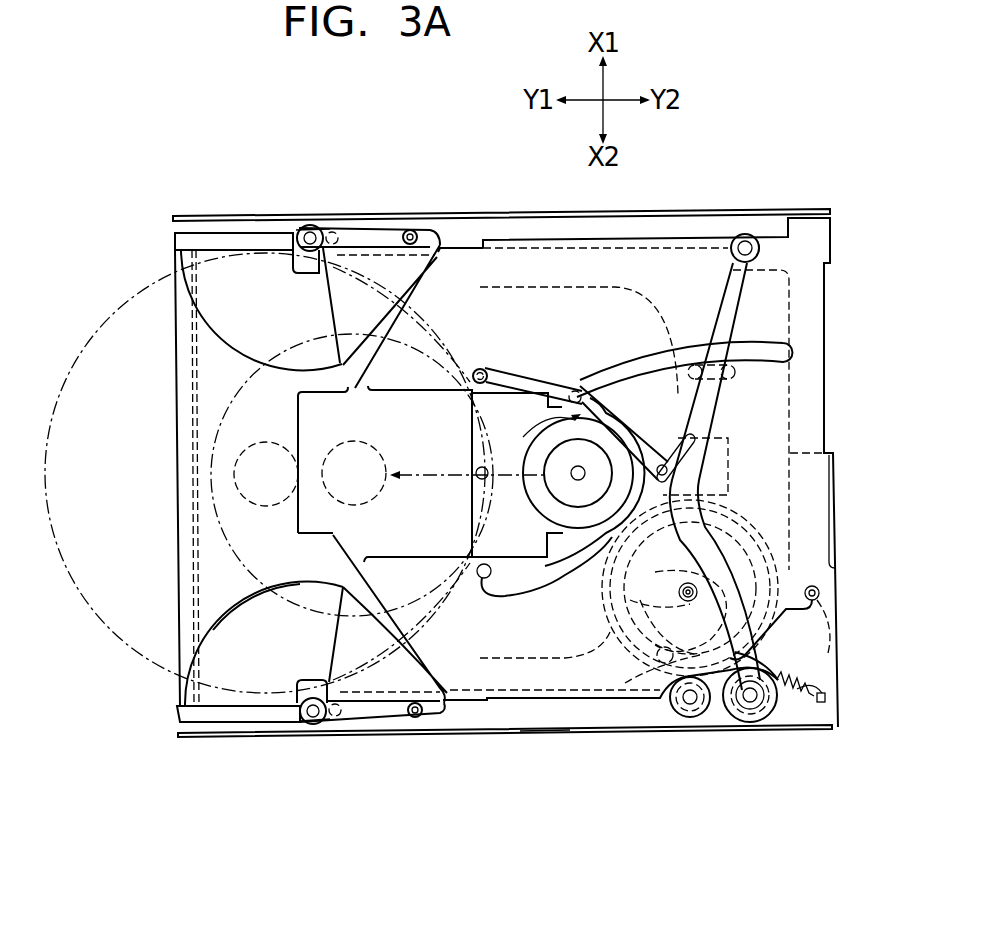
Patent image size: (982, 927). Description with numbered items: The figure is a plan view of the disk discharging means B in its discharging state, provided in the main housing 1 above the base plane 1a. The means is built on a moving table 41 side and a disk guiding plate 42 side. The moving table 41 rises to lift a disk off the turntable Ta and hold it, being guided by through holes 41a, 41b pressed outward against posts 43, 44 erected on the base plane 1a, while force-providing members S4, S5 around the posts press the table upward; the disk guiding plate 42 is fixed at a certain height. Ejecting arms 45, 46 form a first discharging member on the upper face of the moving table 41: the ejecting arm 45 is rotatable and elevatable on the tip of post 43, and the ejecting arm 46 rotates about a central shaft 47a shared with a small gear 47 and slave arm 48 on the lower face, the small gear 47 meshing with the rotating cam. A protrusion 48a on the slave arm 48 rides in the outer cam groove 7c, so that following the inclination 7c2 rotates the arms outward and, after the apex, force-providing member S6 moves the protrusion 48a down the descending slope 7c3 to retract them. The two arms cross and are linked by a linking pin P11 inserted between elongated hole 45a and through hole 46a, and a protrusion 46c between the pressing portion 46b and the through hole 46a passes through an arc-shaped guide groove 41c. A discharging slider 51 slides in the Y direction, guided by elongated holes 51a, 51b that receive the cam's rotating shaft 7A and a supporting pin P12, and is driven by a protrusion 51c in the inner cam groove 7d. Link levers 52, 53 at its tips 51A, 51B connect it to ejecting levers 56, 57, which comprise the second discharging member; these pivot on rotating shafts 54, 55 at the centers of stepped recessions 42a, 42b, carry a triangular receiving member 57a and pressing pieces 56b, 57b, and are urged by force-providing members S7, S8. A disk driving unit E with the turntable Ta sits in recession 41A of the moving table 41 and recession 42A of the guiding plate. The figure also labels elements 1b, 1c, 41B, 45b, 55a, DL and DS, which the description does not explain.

The main housing 1 is at (490, 205).
The base plane 1a is at (210, 729).
The lower rail 1b is at (191, 737).
The upper frame portion 1c is at (208, 230).
The moving table 41 is at (808, 309).
The through hole 41a is at (735, 238).
The through hole 41b is at (826, 595).
The arc-shaped guide groove 41c is at (628, 362).
The recession 41A is at (470, 446).
The guide recess 41B is at (432, 550).
The disk guiding plate 42 is at (183, 558).
The stepped recession 42a is at (274, 600).
The stepped recession 42b is at (218, 342).
The recession 42A is at (306, 412).
The post 43 is at (747, 240).
The post 44 is at (820, 606).
The ejecting arm 45 is at (528, 573).
The elongated hole 45a is at (690, 452).
The lever hook 45b is at (486, 580).
The ejecting arm 46 is at (530, 382).
The through hole 46a is at (610, 548).
The pressing portion 46b is at (484, 370).
The protrusion 46c is at (575, 390).
The small gear 47 is at (768, 708).
The central shaft 47a is at (751, 702).
The slave arm 48 is at (737, 702).
The protrusion 48a is at (710, 723).
The discharging slider 51 is at (556, 262).
The elongated hole 51a is at (668, 603).
The elongated hole 51b is at (725, 388).
The protrusion 51c is at (830, 566).
The tip of discharging slider 51A is at (466, 708).
The tip of discharging slider 51B is at (470, 258).
The link lever 52 is at (408, 718).
The link lever 53 is at (407, 230).
The rotating shaft 54 is at (313, 724).
The rotating shaft 55 is at (310, 225).
The lever finger 55a is at (400, 670).
The ejecting lever 56 is at (343, 644).
The pressing piece 56b is at (357, 722).
The ejecting lever 57 is at (330, 301).
The receiving member 57a is at (392, 282).
The pressing piece 57b is at (356, 228).
The rotating shaft 7A is at (686, 583).
The cam groove 7c is at (747, 530).
The inclination 7c2 is at (660, 690).
The descending slope 7c3 is at (760, 665).
The cam groove 7d is at (672, 590).
The disk discharging means B is at (543, 745).
The disk driving unit E is at (460, 418).
The large disc outline DL is at (103, 628).
The small disc outline DS is at (222, 530).
The turntable Ta is at (547, 505).
The linking pin P11 is at (662, 464).
The supporting pin P12 is at (691, 364).
The force-providing member S4 is at (767, 238).
The force-providing member S5 is at (828, 650).
The force-providing member S6 is at (826, 699).
The force-providing member S7 is at (300, 722).
The force-providing member S8 is at (300, 228).